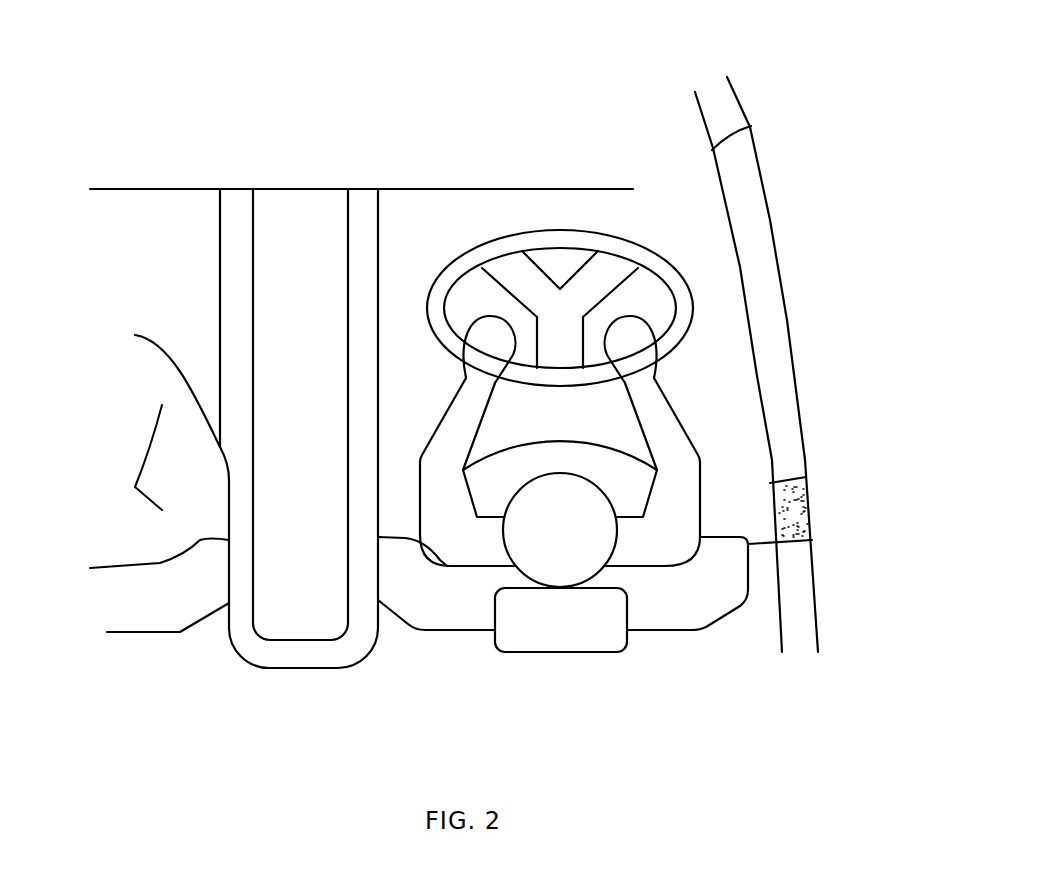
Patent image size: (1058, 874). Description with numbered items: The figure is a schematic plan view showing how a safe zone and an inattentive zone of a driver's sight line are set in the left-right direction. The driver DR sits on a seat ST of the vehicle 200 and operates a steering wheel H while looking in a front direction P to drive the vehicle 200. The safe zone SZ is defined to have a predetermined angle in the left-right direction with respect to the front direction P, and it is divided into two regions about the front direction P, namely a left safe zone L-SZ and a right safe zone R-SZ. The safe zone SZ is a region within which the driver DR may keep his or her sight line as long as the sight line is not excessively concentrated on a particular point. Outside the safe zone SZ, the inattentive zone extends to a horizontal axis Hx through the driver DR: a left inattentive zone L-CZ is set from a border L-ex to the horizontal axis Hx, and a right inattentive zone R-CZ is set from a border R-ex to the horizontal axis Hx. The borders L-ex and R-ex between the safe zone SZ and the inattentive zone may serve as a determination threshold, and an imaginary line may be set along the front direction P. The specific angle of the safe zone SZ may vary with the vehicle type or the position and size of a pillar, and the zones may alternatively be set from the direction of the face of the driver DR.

The vehicle 200 is at (812, 588).
The steering wheel H is at (688, 290).
The driver DR is at (477, 548).
The seat ST is at (668, 628).
The front direction P is at (560, 465).
The horizontal axis Hx is at (760, 465).
The border (left) L-ex is at (560, 465).
The border (right) R-ex is at (560, 465).
The safe zone SZ is at (792, 223).
The left safe zone L-SZ is at (555, 157).
The right safe zone R-SZ is at (765, 258).
The left inattentive zone L-CZ is at (320, 462).
The right inattentive zone R-CZ is at (784, 462).